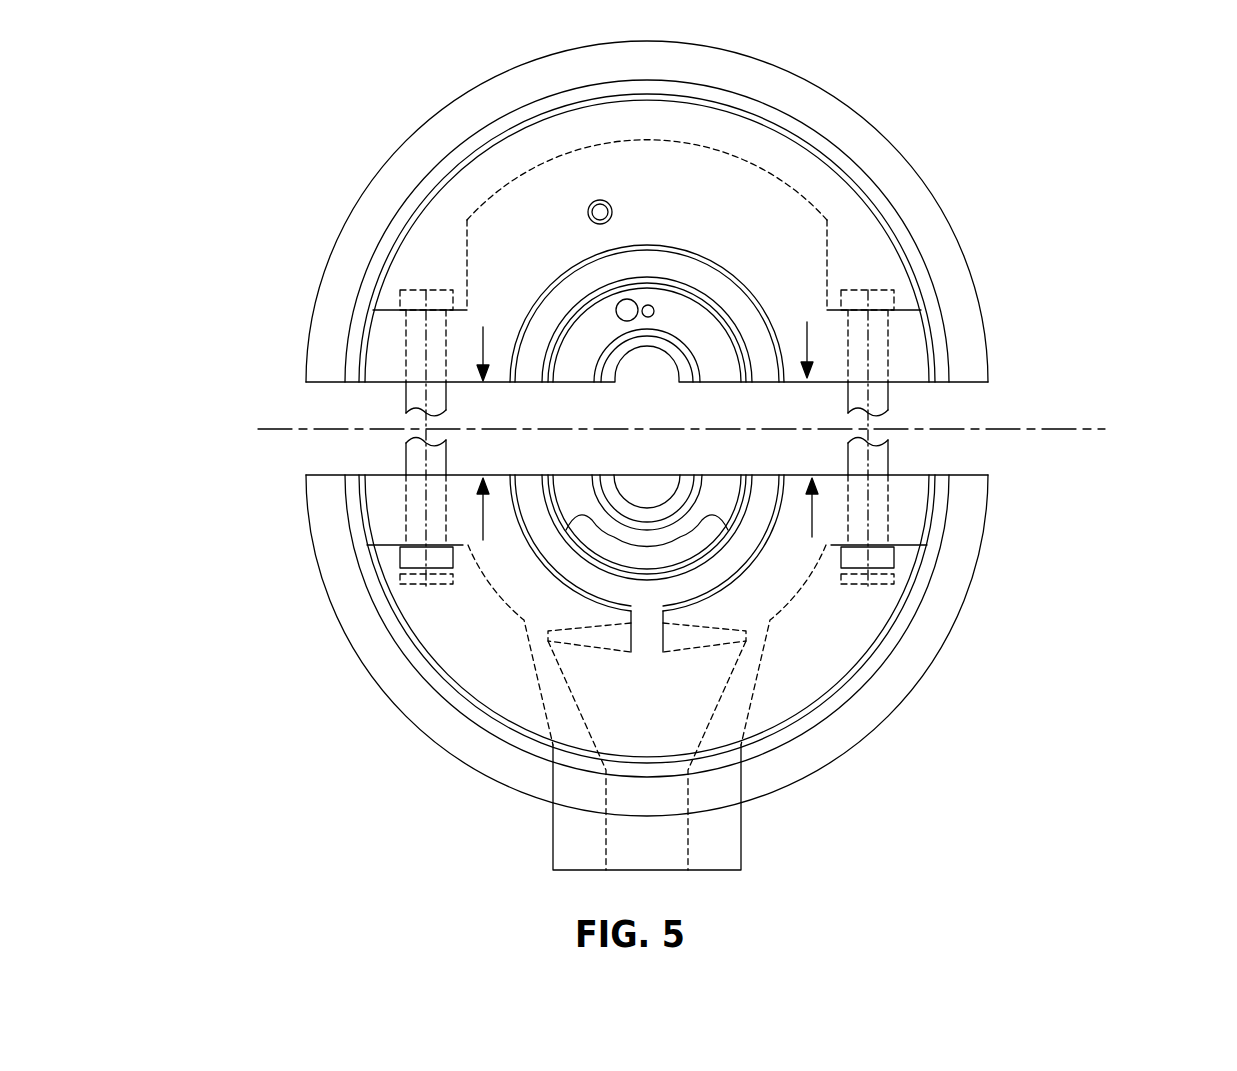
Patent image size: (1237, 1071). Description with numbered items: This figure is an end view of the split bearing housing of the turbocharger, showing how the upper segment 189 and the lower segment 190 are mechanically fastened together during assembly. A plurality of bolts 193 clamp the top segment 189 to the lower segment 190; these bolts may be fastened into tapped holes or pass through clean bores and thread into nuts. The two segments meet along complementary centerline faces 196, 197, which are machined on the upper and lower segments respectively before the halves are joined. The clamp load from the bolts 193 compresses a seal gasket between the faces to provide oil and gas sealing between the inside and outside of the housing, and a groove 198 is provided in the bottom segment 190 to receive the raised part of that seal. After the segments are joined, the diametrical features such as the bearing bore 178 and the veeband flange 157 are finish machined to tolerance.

The veeband flange 157 is at (843, 103).
The bearing bore 178 is at (645, 350).
The upper segment 189 is at (515, 233).
The lower segment 190 is at (528, 618).
The bolts 193 is at (415, 300).
The centerline face of upper segment 196 is at (953, 390).
The centerline face of lower segment 197 is at (900, 472).
The groove 198 is at (472, 486).